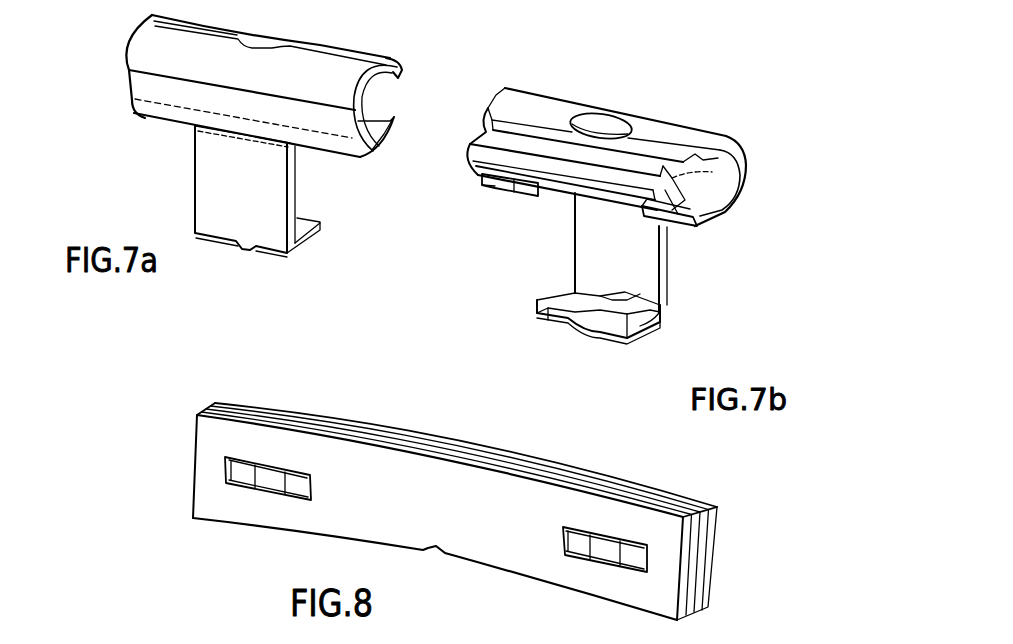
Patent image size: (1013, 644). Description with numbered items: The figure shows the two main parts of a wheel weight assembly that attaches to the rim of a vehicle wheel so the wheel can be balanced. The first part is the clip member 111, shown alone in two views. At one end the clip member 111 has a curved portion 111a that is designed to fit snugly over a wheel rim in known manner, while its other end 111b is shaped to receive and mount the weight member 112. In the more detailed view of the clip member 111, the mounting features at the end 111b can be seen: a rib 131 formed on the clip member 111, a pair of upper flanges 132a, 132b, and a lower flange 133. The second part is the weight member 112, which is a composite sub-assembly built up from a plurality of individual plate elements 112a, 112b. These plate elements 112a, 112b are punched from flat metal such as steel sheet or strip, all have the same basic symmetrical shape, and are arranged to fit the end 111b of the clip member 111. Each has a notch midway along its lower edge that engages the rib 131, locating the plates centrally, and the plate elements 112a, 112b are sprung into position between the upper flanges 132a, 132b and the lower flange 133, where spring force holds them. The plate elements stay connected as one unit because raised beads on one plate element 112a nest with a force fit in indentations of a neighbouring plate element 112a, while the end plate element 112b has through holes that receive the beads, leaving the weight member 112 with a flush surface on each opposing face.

In FIG. 7a, the clip member 111 is at (150, 85).
In FIG. 7b, the clip member 111 is at (653, 127).
In FIG. 7a, the curved portion 111a is at (393, 95).
In FIG. 7b, the curved portion 111a is at (732, 169).
In FIG. 7a, the other end 111b is at (320, 192).
In FIG. 7b, the other end 111b is at (560, 256).
In FIG. 8, the weight member 112 is at (170, 477).
In FIG. 8, the plate element 112a is at (712, 528).
In FIG. 8, the plate element 112b is at (685, 598).
In FIG. 7b, the rib 131 is at (597, 332).
In FIG. 7b, the upper flange 132a is at (510, 193).
In FIG. 7b, the upper flange 132b is at (687, 230).
In FIG. 7b, the lower flange 133 is at (643, 322).